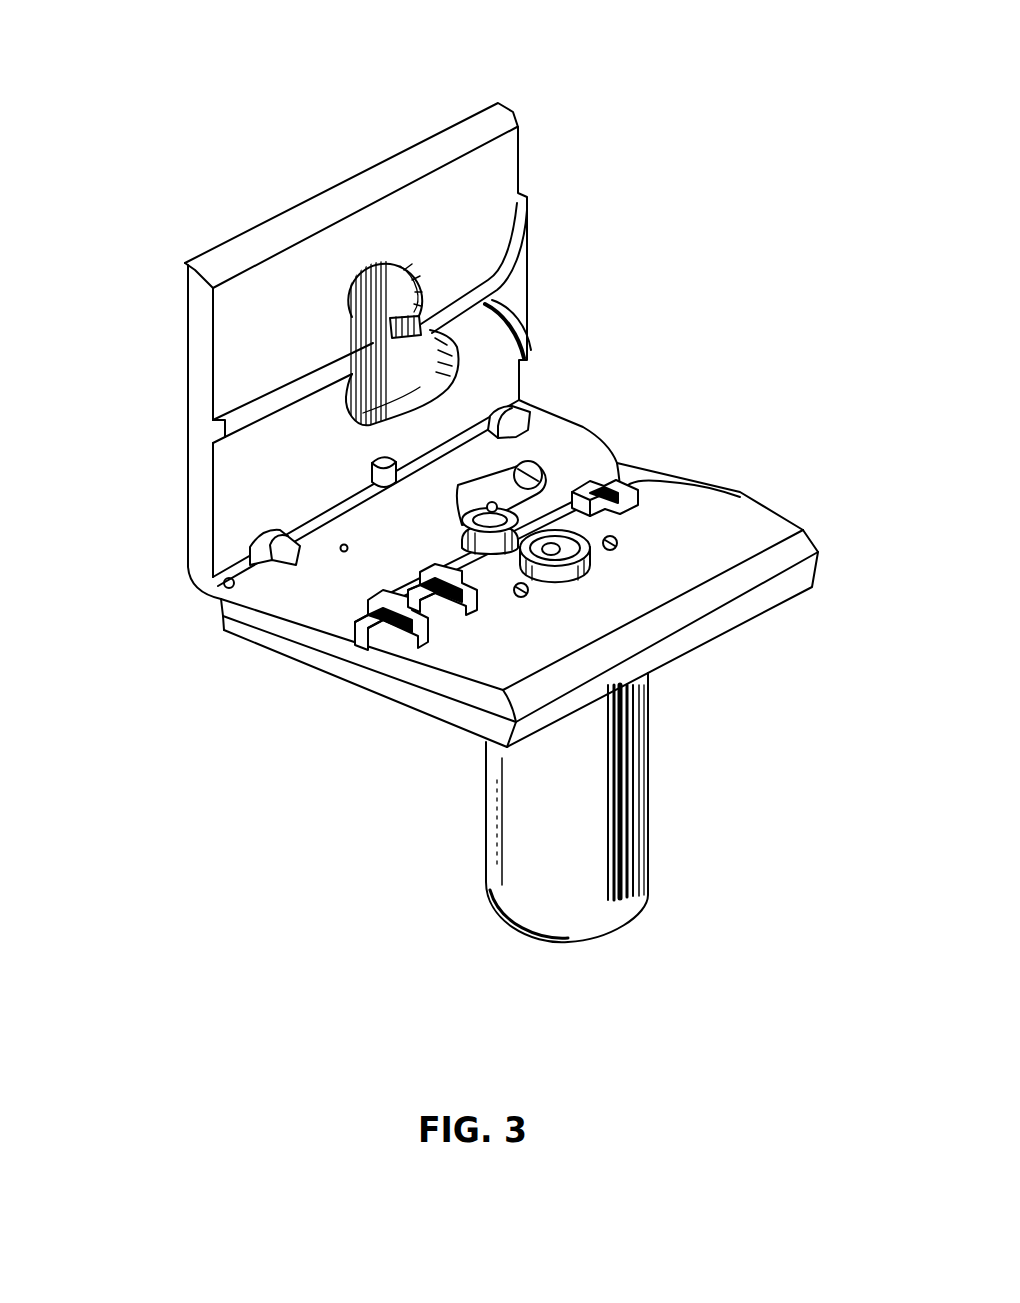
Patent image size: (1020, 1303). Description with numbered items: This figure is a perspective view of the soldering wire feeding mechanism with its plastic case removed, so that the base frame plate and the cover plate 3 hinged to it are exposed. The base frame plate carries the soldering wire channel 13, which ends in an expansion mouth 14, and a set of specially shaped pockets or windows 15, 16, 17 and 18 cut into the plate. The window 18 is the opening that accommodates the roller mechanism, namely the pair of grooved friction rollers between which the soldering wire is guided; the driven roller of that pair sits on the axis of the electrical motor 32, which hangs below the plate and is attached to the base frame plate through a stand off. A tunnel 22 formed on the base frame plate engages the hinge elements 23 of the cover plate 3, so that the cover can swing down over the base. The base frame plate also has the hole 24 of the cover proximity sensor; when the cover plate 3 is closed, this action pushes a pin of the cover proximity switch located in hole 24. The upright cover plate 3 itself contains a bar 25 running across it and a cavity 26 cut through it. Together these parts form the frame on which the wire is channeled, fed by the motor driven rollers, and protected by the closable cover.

The cover plate 3 is at (302, 265).
The soldering wire channel 13 is at (353, 655).
The expansion mouth 14 is at (630, 472).
The pocket or window 15 is at (410, 637).
The pocket or window 16 is at (473, 607).
The pocket or window 17 is at (648, 490).
The window 18 is at (602, 562).
The tunnel 22 is at (373, 485).
The hinge elements 23 is at (515, 410).
The hole of the cover proximity sensor 24 is at (337, 553).
The bar 25 is at (220, 415).
The cavity 26 is at (383, 297).
The electrical motor 32 is at (593, 802).